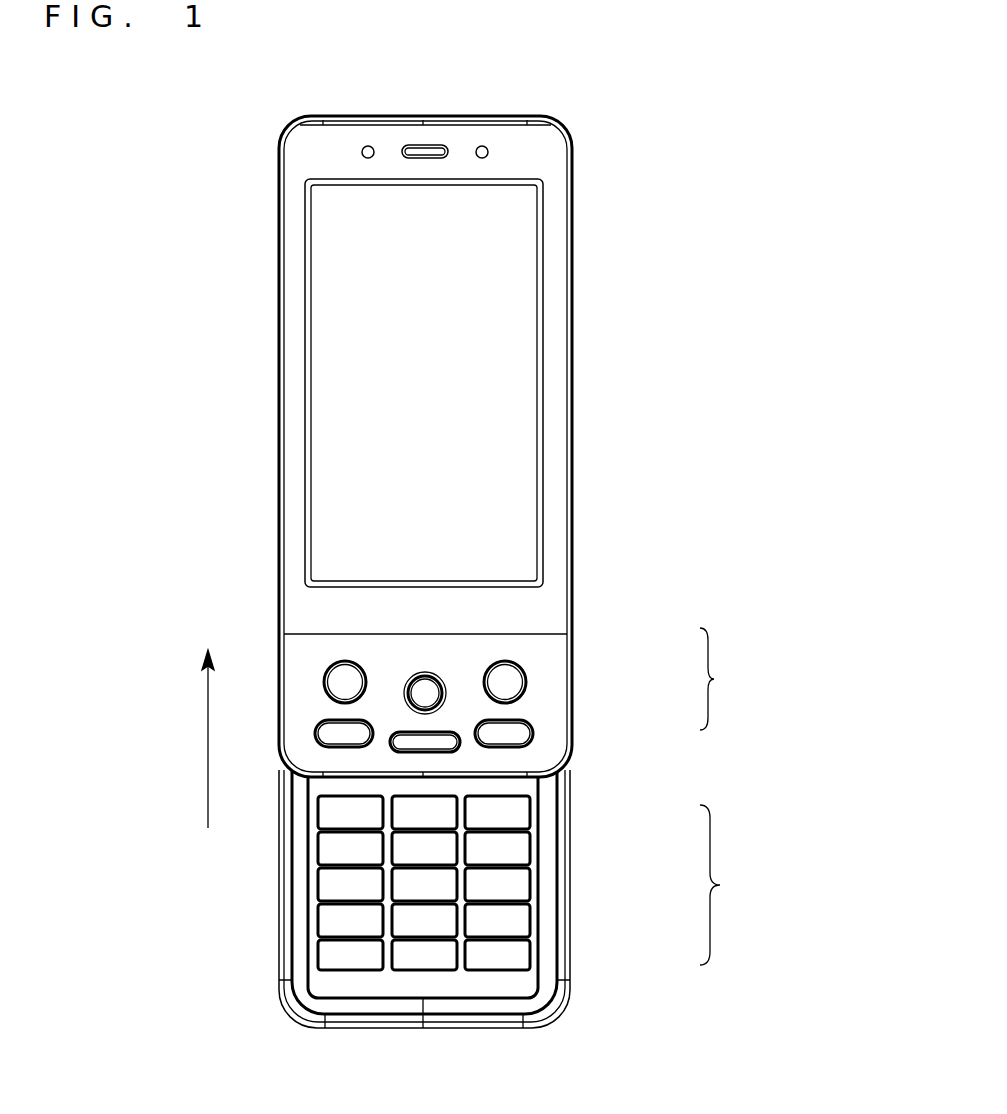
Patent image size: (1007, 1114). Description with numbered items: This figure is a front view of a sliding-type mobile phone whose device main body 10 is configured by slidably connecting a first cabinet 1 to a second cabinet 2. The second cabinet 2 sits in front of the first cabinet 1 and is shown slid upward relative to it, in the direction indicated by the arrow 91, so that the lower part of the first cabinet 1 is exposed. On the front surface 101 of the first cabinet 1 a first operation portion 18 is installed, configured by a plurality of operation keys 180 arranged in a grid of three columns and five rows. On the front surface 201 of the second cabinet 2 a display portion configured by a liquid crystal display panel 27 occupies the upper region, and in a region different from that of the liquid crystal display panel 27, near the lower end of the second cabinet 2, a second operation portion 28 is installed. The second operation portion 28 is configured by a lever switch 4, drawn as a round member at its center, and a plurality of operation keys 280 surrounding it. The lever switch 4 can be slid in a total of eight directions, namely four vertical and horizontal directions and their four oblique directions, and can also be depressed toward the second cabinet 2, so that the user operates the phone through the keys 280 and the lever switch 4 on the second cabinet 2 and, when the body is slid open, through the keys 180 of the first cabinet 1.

The device main body 10 is at (587, 163).
The first cabinet 1 is at (558, 1012).
The second cabinet 2 is at (572, 250).
The lever switch 4 is at (427, 687).
The first operation portion 18 is at (540, 883).
The operation key 180 is at (515, 813).
The liquid crystal display panel 27 is at (505, 412).
The second operation portion 28 is at (533, 690).
The operation key 280 is at (508, 682).
The sliding direction arrow 91 is at (208, 758).
The front surface 101 is at (304, 958).
The front surface 201 is at (316, 613).